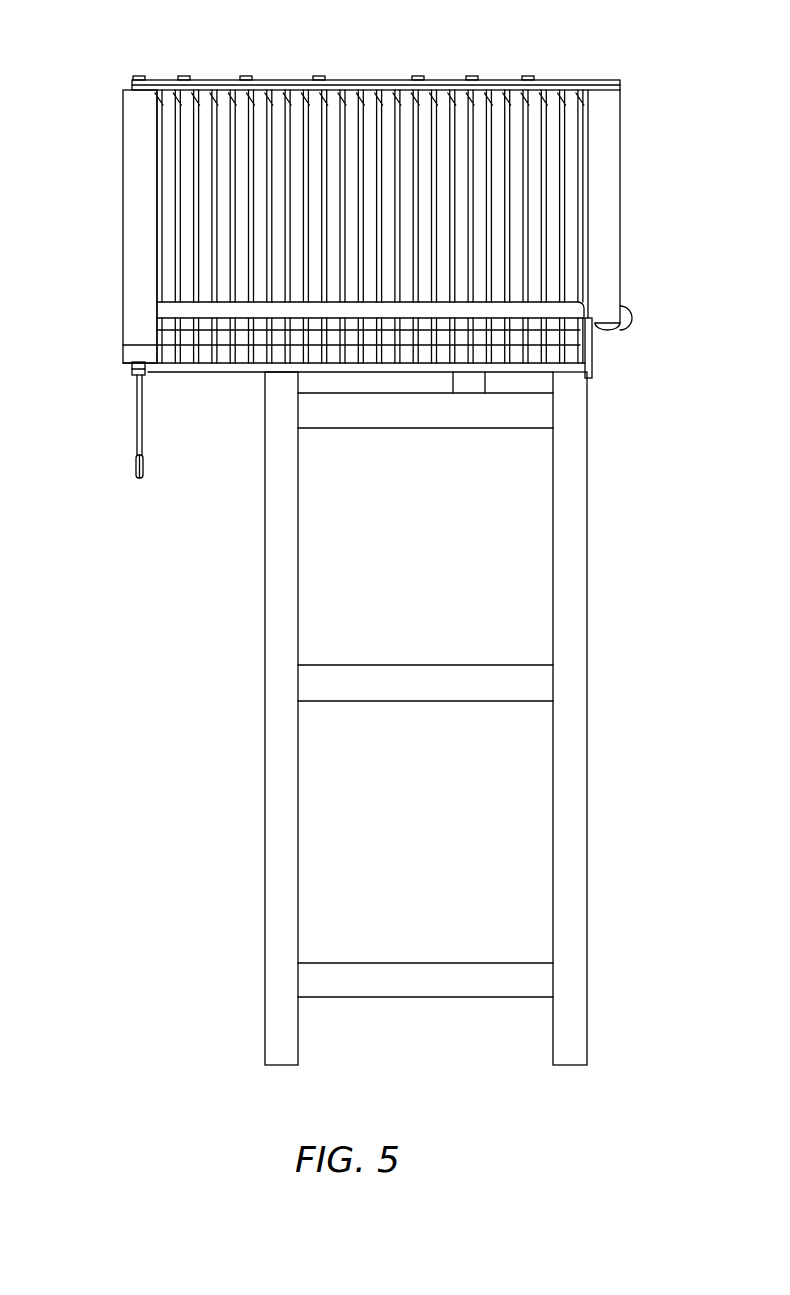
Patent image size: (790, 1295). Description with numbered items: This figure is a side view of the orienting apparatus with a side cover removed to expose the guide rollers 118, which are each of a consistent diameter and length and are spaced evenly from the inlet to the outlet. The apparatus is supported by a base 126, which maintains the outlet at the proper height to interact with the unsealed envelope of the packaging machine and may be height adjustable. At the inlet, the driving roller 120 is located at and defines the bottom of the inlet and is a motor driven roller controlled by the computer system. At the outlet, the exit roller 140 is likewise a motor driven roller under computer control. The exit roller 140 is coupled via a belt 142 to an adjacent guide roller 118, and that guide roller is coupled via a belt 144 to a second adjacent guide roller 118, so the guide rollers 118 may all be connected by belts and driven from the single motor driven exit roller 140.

The guide rollers 118 is at (288, 80).
The driving roller 120 is at (627, 318).
The base 126 is at (574, 499).
The exit roller 140 is at (137, 204).
The belt 142 is at (140, 346).
The belt 144 is at (183, 363).